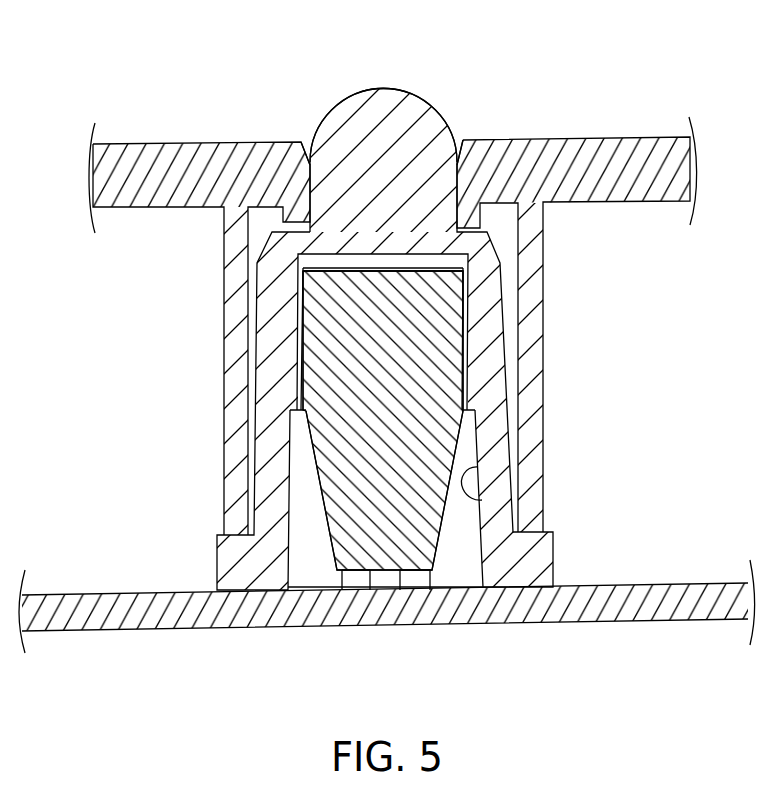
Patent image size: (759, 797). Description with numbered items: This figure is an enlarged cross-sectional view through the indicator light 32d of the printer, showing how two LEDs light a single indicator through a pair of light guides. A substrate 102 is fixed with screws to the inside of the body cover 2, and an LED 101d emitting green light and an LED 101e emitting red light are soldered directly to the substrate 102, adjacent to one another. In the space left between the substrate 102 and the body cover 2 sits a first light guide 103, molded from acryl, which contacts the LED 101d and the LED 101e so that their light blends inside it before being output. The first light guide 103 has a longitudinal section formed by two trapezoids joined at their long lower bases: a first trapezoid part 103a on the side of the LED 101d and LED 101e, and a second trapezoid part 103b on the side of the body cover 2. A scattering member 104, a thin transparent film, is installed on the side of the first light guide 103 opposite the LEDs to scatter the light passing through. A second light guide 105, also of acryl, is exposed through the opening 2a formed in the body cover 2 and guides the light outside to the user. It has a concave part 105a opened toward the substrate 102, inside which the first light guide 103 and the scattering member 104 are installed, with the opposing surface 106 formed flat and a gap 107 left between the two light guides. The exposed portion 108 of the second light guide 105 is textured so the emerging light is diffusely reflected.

The body cover 2 is at (652, 140).
The opening 2a is at (455, 147).
The indicator light 32d is at (384, 82).
The second light guide 105 is at (424, 112).
The portion of the surface of the second light guide 108 is at (355, 97).
The surface 106 is at (303, 276).
The gap 107 is at (433, 263).
The scattering member 104 is at (430, 285).
The first light guide 103 is at (400, 355).
The first trapezoid part 103a is at (340, 472).
The second trapezoid part 103b is at (330, 330).
The concave part 105a is at (467, 491).
The substrate 102 is at (638, 615).
The LED 101d is at (356, 582).
The LED 101e is at (412, 582).